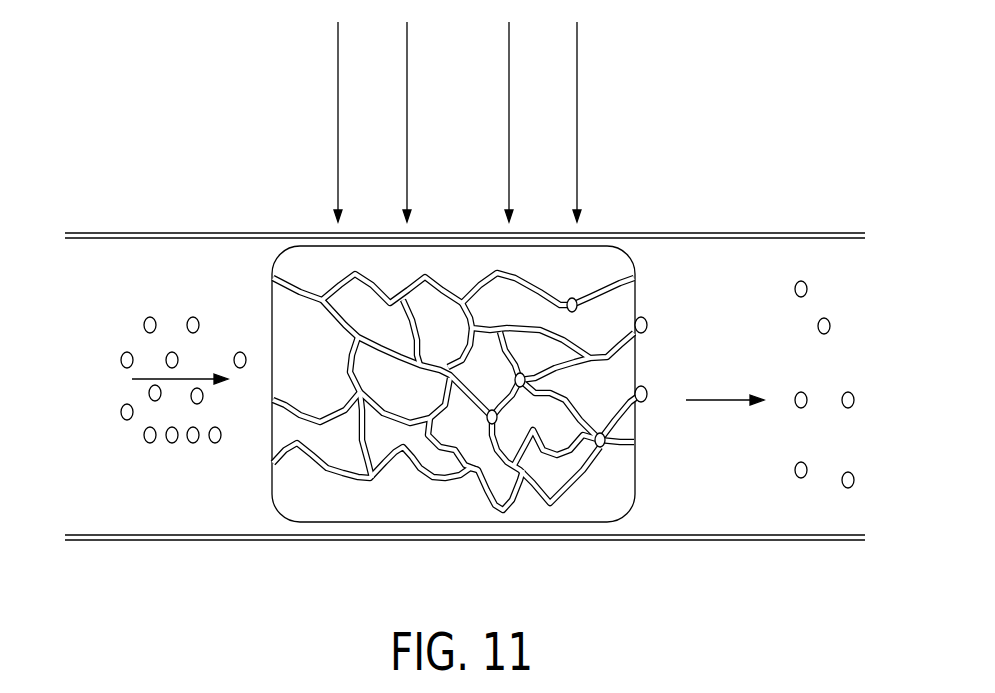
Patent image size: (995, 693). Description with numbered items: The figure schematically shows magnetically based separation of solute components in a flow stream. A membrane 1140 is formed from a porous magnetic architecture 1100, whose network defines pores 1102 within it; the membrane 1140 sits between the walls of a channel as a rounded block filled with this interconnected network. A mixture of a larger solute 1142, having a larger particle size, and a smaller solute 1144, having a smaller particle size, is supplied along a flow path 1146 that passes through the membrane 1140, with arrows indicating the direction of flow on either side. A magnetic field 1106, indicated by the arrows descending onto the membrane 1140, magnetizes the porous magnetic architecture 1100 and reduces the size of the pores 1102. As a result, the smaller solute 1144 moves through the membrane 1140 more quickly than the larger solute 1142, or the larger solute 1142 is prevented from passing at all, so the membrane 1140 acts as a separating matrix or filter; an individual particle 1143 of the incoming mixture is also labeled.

The porous magnetic architecture 1100 is at (295, 497).
The pores 1102 is at (373, 474).
The magnetic field 1106 is at (509, 70).
The membrane 1140 is at (290, 444).
The larger solute 1142 is at (124, 352).
The particle 1143 is at (148, 316).
The smaller solute 1144 is at (794, 287).
The flow path 1146 is at (200, 377).